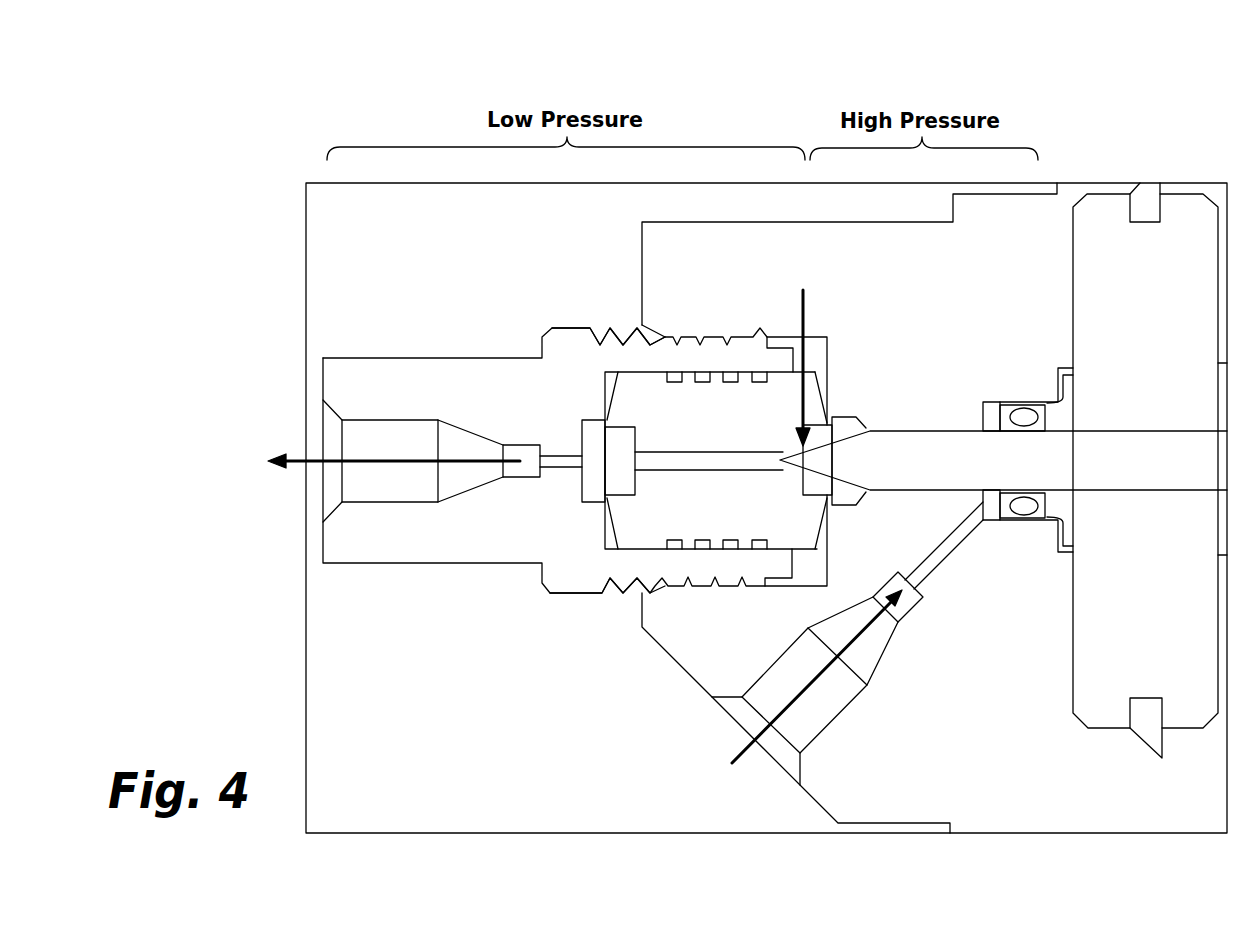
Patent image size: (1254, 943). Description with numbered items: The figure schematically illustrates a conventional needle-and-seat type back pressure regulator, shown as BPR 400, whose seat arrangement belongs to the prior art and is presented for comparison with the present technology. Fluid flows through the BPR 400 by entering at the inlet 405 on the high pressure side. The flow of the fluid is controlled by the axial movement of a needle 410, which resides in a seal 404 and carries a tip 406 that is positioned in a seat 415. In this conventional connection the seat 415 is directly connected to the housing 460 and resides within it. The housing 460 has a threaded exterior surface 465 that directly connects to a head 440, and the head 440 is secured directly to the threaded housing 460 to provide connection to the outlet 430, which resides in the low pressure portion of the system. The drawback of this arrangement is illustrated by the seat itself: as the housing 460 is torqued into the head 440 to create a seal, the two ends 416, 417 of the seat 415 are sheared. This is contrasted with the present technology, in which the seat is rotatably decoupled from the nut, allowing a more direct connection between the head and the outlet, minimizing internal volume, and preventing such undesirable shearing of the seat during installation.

The back pressure regulator 400 is at (737, 110).
The seal 404 is at (1052, 503).
The inlet 405 is at (742, 713).
The tip 406 is at (803, 354).
The needle 410 is at (1007, 470).
The seat 415 is at (733, 515).
The end of seat 416 is at (618, 550).
The end of seat 417 is at (803, 513).
The outlet 430 is at (328, 440).
The head 440 is at (1008, 319).
The housing 460 is at (525, 404).
The threaded exterior surface 465 is at (620, 590).